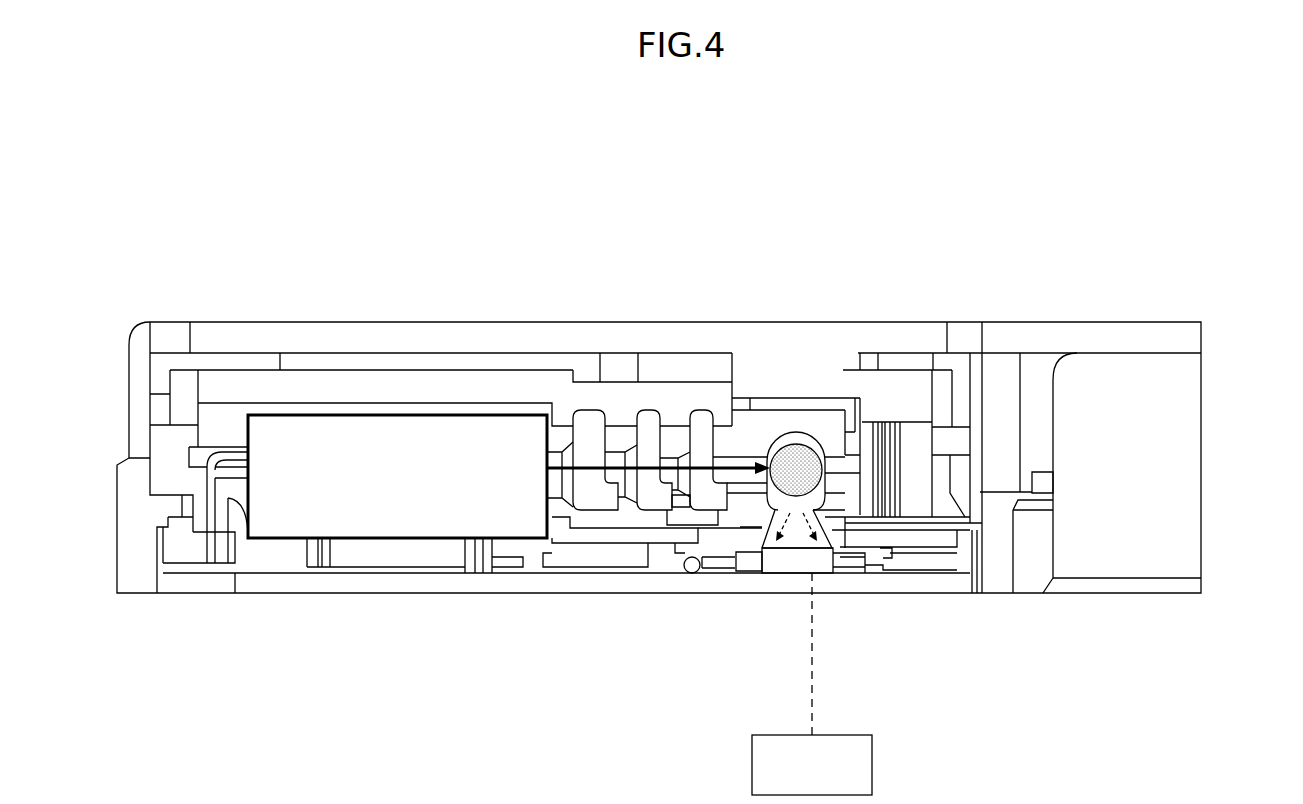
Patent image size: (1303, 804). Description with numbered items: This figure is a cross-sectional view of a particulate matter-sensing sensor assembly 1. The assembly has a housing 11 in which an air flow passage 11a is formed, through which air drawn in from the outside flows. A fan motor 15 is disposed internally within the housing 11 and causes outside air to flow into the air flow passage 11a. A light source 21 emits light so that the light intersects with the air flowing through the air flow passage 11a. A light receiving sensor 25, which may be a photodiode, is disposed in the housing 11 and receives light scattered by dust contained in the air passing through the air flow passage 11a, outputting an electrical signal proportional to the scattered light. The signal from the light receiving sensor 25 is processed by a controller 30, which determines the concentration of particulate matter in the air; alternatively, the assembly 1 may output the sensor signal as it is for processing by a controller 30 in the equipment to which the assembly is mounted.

The particulate matter-sensing sensor assembly 1 is at (1120, 162).
The housing 11 is at (522, 333).
The air flow passage 11a is at (797, 460).
The fan motor 15 is at (1165, 455).
The light source 21 is at (358, 447).
The light receiving sensor 25 is at (793, 573).
The controller 30 is at (855, 773).